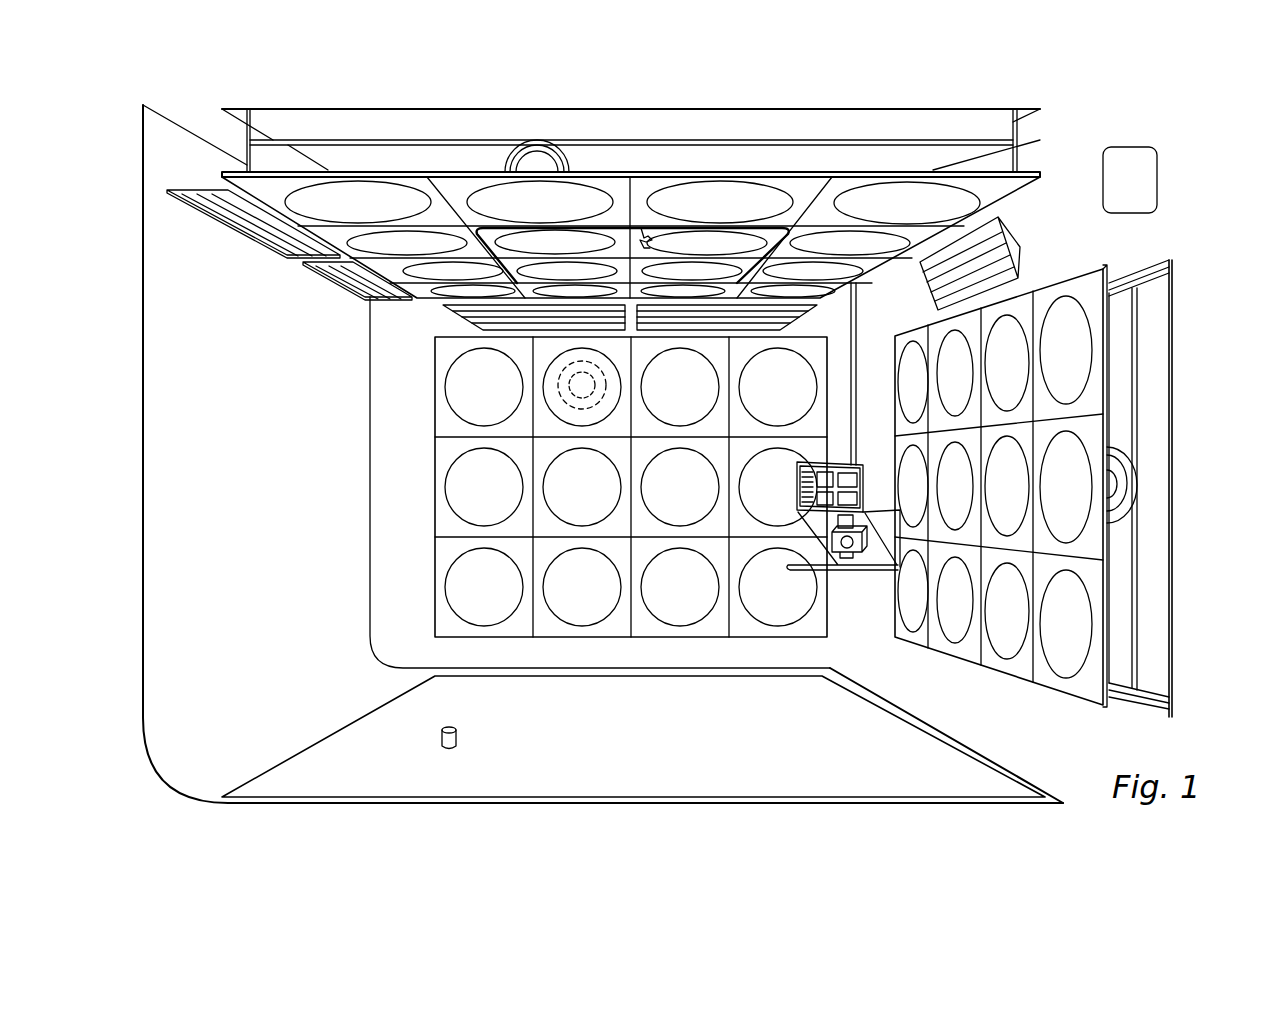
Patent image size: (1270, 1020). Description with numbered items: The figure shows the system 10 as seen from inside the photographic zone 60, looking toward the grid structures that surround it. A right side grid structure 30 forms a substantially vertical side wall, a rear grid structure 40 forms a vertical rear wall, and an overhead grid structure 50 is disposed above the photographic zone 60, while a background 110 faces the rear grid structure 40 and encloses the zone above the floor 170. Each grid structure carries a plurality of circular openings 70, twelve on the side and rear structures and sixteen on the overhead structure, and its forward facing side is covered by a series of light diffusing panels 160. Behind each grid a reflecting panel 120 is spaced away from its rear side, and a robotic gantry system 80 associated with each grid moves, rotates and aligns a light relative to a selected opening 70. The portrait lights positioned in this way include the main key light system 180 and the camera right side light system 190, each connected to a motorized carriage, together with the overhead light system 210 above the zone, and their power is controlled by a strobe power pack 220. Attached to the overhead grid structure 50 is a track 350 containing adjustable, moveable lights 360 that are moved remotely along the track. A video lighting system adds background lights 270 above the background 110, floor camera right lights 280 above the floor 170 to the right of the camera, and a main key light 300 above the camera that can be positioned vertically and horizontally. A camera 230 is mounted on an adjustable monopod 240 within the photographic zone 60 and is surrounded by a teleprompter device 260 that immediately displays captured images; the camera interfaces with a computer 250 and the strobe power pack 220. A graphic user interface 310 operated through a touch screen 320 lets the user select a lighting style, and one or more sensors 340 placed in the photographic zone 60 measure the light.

The system 10 is at (1170, 130).
The right side grid structure 30 is at (442, 447).
The rear grid structure 40 is at (1090, 543).
The overhead grid structure 50 is at (645, 188).
The photographic zone 60 is at (627, 714).
The openings 70 is at (396, 202).
The robotic gantry system 80 is at (938, 139).
The background 110 is at (229, 496).
The reflecting panel 120 is at (346, 109).
The light diffusing panels 160 is at (549, 211).
The floor 170 is at (690, 782).
The main key light system 180 is at (1113, 480).
The camera right side light system 190 is at (583, 405).
The overhead light system 210 is at (538, 167).
The strobe power pack 220 is at (1133, 213).
The camera 230 is at (847, 555).
The adjustable monopod 240 is at (857, 316).
The computer 250 is at (851, 478).
The teleprompter device 260 is at (823, 478).
The background lights 270 is at (241, 226).
The floor camera right lights 280 is at (460, 320).
The main key lights 300 is at (1022, 248).
The graphic user interface 310 is at (808, 497).
The touch screen 320 is at (856, 500).
The sensors 340 is at (454, 735).
The track 350 is at (775, 225).
The moveable lights 360 is at (668, 245).